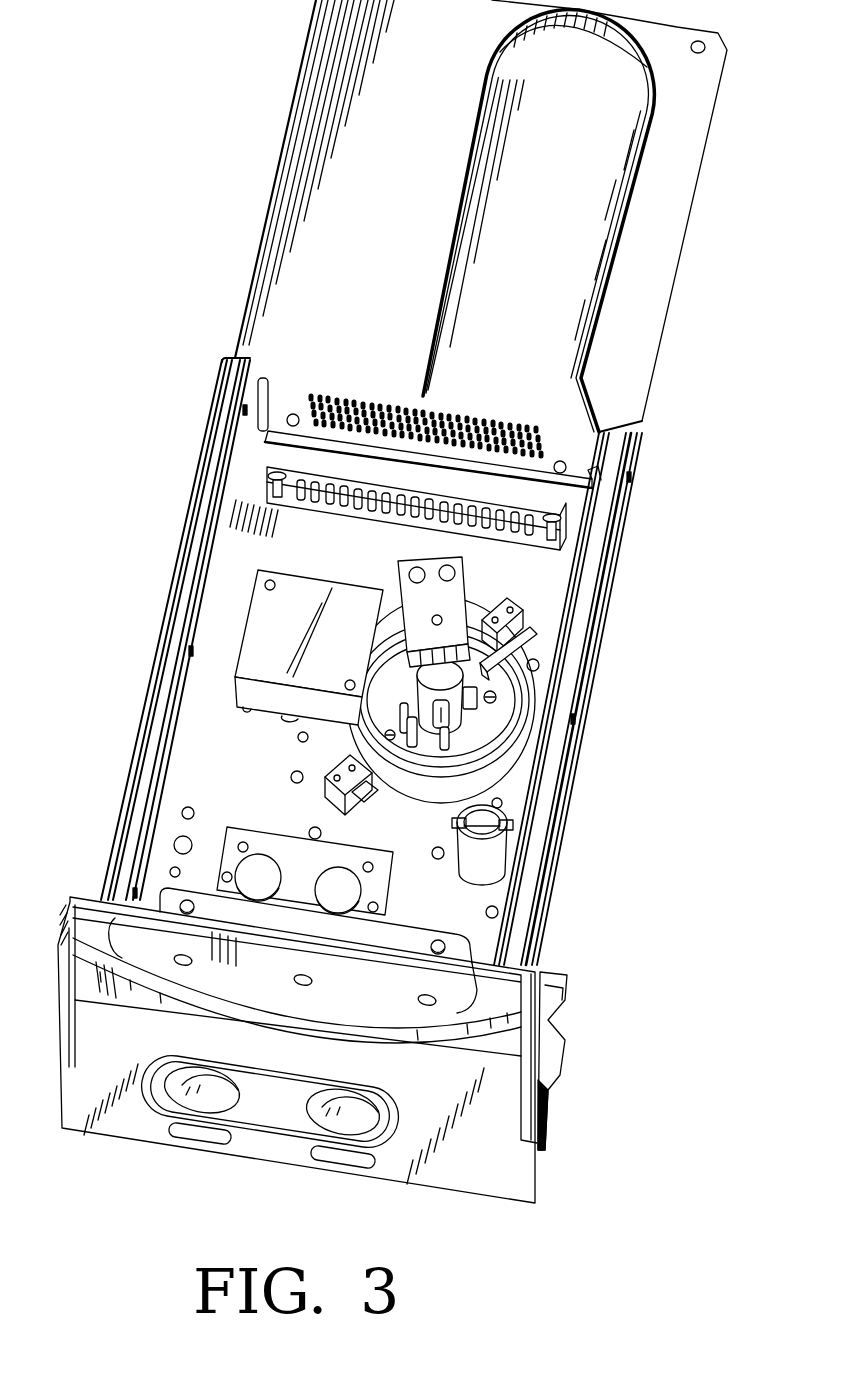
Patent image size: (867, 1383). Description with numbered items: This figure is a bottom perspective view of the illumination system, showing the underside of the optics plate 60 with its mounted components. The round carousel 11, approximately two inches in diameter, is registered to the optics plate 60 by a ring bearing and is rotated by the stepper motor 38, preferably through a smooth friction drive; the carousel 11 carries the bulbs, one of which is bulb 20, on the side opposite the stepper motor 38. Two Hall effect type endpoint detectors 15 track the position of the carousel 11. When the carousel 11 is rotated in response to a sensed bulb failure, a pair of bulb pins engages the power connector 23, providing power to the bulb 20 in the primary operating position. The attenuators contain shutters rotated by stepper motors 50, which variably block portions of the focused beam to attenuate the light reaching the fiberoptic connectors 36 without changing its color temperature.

The carousel 11 is at (490, 772).
The endpoint detectors 15 is at (527, 607).
The bulb 20 is at (450, 716).
The power connector 23 is at (464, 587).
The fiberoptic connectors 36 is at (203, 1088).
The stepper motor 38 is at (247, 617).
The stepper motors 50 is at (235, 863).
The optics plate 60 is at (332, 558).